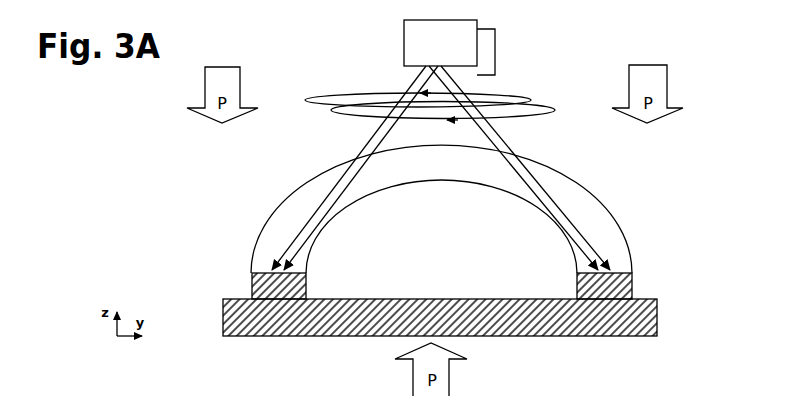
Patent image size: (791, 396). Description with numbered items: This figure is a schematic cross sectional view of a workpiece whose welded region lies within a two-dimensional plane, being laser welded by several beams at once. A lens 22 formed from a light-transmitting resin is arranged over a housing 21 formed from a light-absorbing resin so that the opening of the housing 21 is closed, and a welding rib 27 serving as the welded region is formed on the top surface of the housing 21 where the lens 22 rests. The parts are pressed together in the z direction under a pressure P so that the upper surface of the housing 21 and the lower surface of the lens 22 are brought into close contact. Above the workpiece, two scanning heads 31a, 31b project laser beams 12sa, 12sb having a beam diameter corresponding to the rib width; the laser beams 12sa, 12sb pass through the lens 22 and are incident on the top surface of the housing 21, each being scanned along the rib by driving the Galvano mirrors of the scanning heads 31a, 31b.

The scanning head 31a is at (393, 56).
The scanning head 31b is at (498, 65).
The laser beam 12sa is at (350, 147).
The laser beam 12sb is at (522, 147).
The lens 22 is at (612, 237).
The support member 27 is at (641, 272).
The housing 21 is at (639, 318).